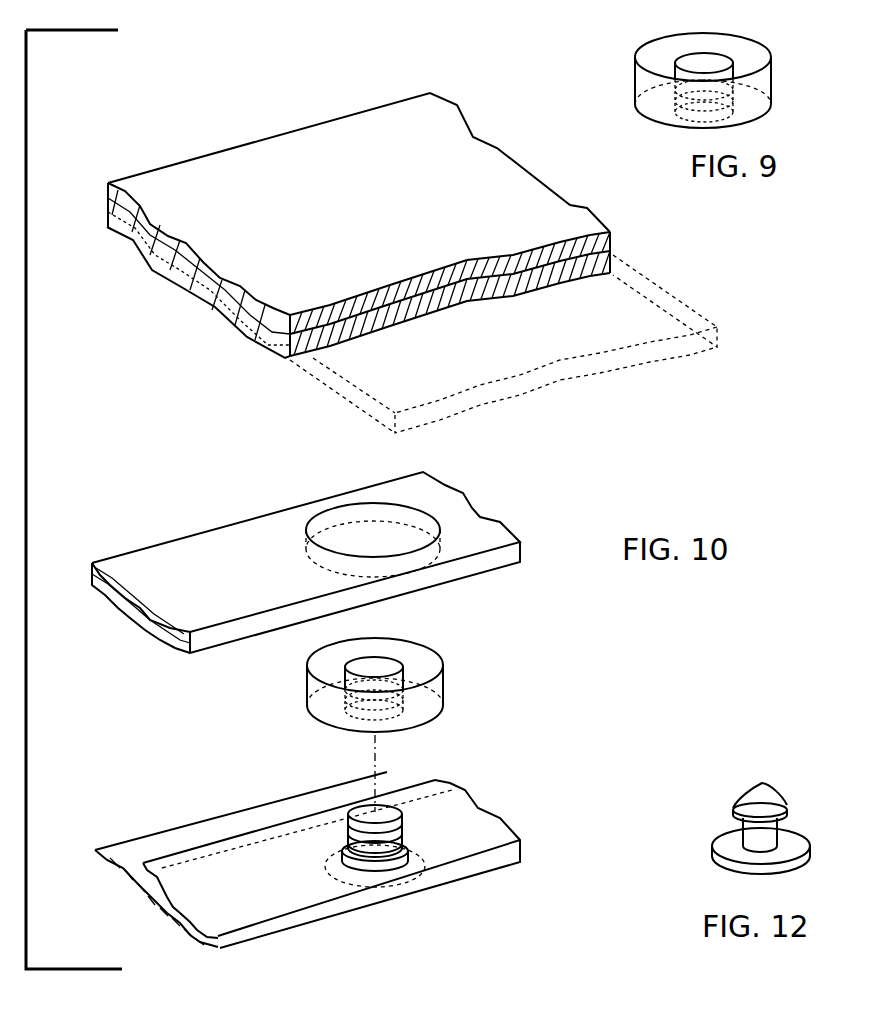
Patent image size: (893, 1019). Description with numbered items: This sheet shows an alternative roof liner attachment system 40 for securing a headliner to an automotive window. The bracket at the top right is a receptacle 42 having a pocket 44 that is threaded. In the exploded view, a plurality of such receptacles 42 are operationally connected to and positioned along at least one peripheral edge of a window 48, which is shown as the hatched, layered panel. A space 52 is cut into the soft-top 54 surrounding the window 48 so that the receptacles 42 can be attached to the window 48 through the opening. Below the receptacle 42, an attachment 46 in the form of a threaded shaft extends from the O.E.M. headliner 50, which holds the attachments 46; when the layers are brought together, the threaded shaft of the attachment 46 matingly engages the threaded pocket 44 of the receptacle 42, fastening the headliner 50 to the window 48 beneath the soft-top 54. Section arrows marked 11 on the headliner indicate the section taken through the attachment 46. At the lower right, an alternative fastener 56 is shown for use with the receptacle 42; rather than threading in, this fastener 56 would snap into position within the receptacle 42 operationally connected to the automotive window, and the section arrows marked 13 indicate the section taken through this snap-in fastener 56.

In FIG. 10, the system 40 is at (674, 450).
In FIG. 9, the receptacle 42 is at (757, 43).
In FIG. 10, the receptacle 42 is at (428, 653).
In FIG. 9, the pocket 44 is at (690, 62).
In FIG. 10, the attachment 46 is at (357, 810).
In FIG. 10, the window 48 is at (208, 310).
In FIG. 10, the O.E.M. headliner 50 is at (223, 943).
In FIG. 10, the space 52 is at (330, 505).
In FIG. 10, the soft-top 54 is at (497, 148).
In FIG. 12, the alternative fastener 56 is at (750, 787).
In FIG. 10, the section line 11- 11 is at (270, 845).
In FIG. 12, the section line 13- 13 is at (818, 805).